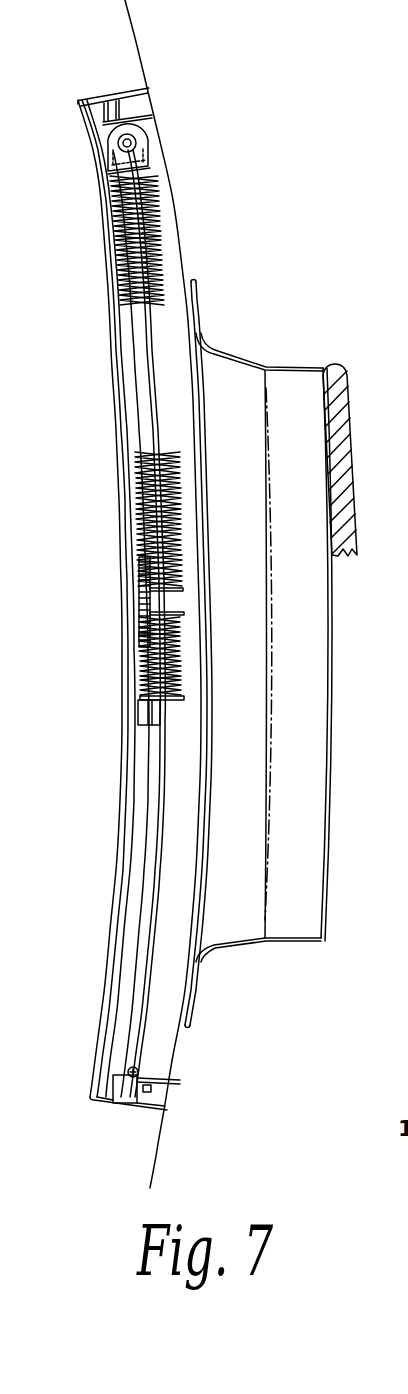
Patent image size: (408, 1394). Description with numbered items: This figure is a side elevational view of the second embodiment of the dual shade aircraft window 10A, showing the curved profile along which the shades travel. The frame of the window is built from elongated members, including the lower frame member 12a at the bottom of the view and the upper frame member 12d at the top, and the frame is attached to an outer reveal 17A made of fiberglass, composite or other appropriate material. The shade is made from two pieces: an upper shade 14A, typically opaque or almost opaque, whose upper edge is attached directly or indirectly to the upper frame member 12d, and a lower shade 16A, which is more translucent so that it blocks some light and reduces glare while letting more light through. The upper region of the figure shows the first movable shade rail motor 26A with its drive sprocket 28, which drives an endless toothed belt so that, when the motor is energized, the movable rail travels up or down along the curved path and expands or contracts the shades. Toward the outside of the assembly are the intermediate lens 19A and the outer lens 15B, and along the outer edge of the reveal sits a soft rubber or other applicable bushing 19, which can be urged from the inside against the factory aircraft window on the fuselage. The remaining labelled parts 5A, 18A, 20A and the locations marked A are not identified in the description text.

The dual shade window 10A is at (297, 258).
The trim panel 5A is at (117, 837).
The upper frame member 12d is at (96, 100).
The lower frame member 12a is at (110, 1100).
The first movable shade rail motor 26A is at (140, 118).
The drive sprocket 28 is at (148, 145).
The upper shade 14A is at (150, 255).
The lower shade 16A is at (180, 650).
The spring seat plate 18A is at (182, 588).
The lower spring seat 20A is at (176, 700).
The adjustment element A is at (140, 597).
The outer reveal 17A is at (235, 353).
The intermediate lens 19A is at (203, 840).
The bushing 19 is at (352, 440).
The outer lens 15B is at (332, 788).